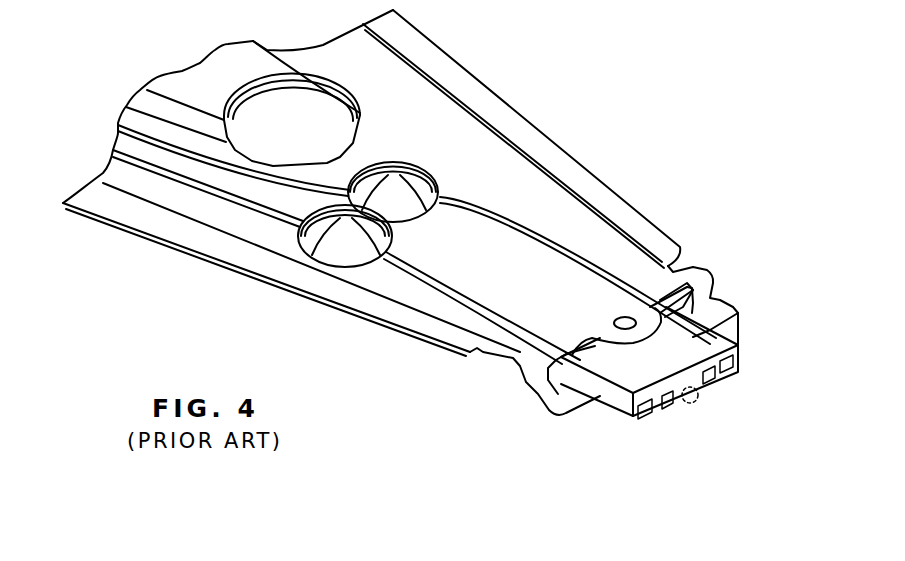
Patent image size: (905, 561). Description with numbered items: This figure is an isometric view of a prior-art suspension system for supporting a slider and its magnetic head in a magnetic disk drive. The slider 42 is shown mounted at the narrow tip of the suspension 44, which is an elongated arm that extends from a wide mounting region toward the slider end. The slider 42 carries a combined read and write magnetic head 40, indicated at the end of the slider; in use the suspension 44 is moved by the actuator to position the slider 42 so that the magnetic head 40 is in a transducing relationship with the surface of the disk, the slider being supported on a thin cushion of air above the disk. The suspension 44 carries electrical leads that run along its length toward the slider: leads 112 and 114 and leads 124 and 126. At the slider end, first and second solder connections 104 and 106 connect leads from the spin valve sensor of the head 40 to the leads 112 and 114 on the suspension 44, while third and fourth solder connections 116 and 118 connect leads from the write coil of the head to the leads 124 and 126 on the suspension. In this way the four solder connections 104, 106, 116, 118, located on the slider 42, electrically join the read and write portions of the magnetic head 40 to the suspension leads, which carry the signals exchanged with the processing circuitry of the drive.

The suspension 44 is at (551, 121).
The slider 42 is at (578, 424).
The magnetic head 40 is at (700, 403).
The first solder connection 104 is at (645, 419).
The third solder connection 116 is at (665, 409).
The second solder connection 106 is at (738, 361).
The fourth solder connection 118 is at (713, 382).
The lead 112 is at (413, 270).
The lead 114 is at (600, 260).
The lead 124 is at (460, 290).
The lead 126 is at (520, 229).